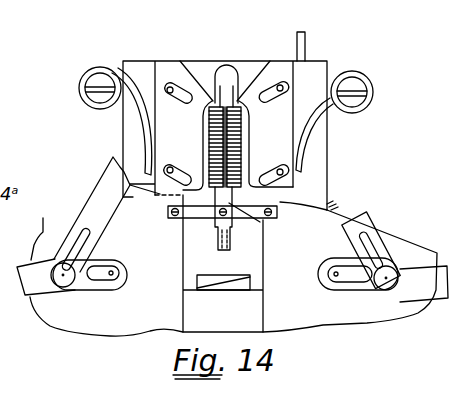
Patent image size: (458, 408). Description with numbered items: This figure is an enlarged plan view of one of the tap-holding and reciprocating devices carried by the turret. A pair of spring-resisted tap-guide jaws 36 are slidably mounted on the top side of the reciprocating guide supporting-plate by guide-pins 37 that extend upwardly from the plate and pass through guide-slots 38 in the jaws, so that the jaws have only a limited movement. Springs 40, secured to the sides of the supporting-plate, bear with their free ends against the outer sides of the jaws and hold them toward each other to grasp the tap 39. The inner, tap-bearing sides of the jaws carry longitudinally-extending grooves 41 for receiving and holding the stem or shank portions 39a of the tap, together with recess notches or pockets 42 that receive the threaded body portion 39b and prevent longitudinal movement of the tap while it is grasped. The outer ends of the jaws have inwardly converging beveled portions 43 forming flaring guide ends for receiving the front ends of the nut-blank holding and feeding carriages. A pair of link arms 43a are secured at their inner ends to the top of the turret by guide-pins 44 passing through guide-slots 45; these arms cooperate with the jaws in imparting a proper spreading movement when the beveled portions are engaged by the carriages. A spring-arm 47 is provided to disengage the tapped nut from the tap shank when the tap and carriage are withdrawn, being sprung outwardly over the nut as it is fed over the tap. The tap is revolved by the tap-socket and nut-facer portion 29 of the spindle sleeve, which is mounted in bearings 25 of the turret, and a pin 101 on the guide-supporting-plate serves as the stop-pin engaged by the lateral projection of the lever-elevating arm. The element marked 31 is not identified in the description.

The bearings 25 is at (243, 318).
The tap-socket and nut-facer portions 29 is at (241, 285).
The housing corner 31 is at (331, 203).
The tap-guide jaws 36 is at (165, 135).
The guide-pins 37 is at (282, 86).
The guide-slots 38 is at (130, 184).
The tap 39 is at (241, 137).
The stem or shank portions 39a is at (243, 92).
The threaded body portion 39b is at (239, 160).
The springs 40 is at (137, 110).
The longitudinally-extending grooves 41 is at (202, 116).
The recess notches or pockets 42 is at (240, 118).
The inwardly converging beveled portions 43 is at (213, 72).
The link arms 43a is at (83, 209).
The guide-pins 44 is at (65, 287).
The guide-slots 45 is at (348, 275).
The spring-arm 47 is at (233, 242).
The pin 101 is at (301, 40).